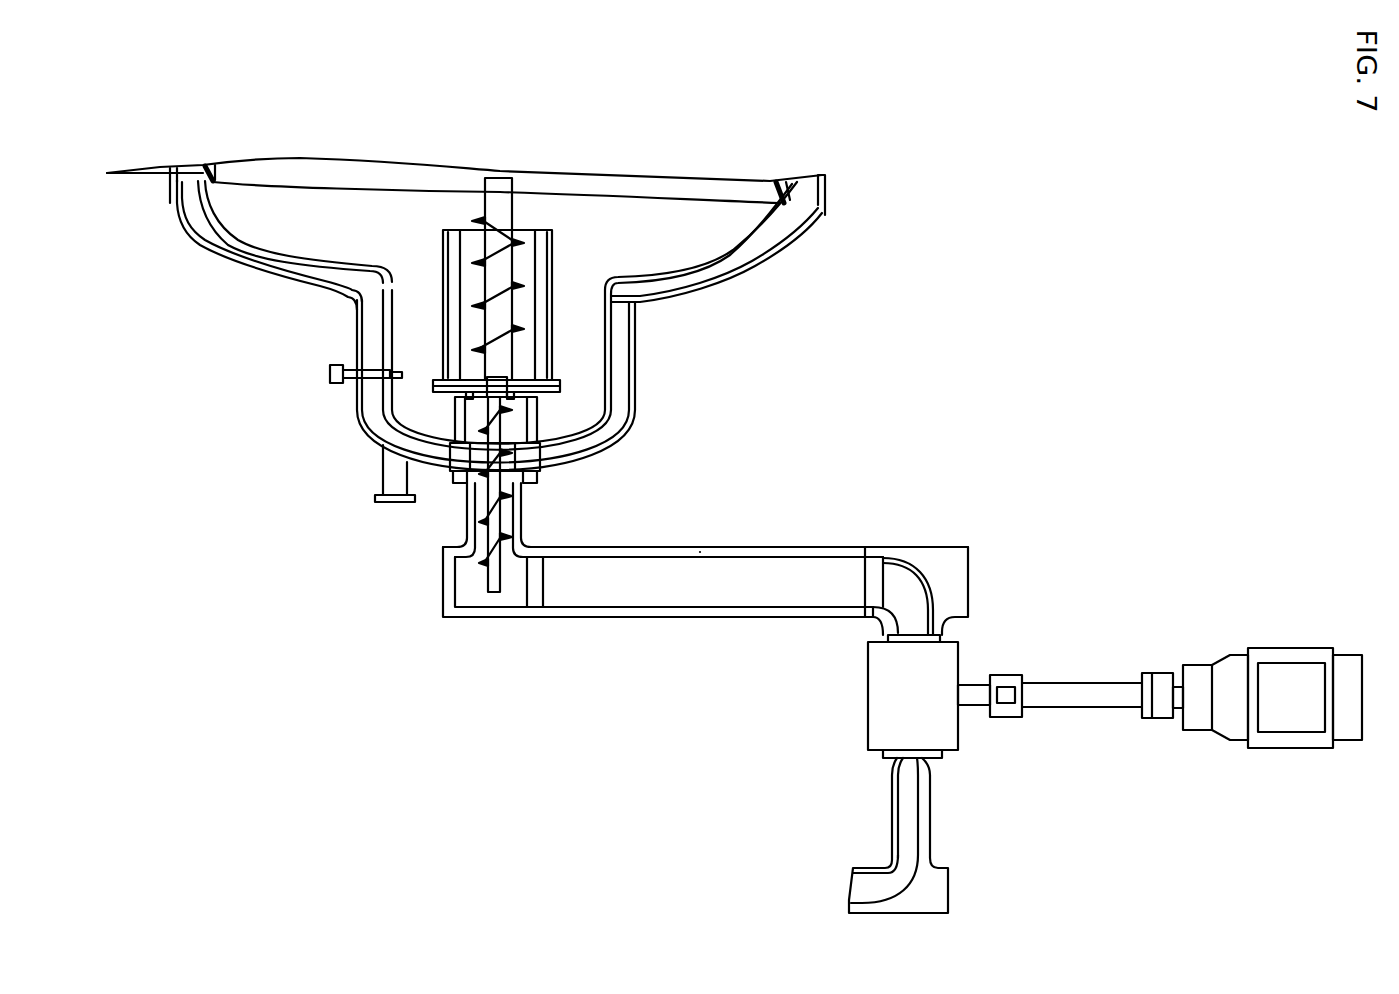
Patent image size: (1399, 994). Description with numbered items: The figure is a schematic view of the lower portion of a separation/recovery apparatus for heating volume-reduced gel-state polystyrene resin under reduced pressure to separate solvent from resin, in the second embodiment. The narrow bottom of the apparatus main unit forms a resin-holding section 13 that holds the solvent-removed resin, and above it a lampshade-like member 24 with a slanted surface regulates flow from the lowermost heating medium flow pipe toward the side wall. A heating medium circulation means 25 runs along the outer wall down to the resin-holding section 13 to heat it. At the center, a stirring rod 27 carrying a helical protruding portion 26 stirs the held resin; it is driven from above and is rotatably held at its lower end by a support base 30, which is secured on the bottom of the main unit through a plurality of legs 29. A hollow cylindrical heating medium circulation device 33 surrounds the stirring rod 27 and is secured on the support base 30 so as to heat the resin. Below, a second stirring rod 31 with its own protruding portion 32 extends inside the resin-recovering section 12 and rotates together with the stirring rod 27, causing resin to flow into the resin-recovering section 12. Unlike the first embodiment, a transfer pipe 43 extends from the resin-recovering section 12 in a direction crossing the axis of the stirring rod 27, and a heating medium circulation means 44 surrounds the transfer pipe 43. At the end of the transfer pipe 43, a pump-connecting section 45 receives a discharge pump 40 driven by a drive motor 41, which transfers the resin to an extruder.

The resin-recovering section 12 is at (520, 514).
The resin-holding section 13 is at (567, 400).
The lampshade-like member 24 is at (823, 215).
The heating medium circulation means 25 is at (208, 226).
The protruding portion 26 is at (480, 262).
The stirring rod 27 is at (498, 207).
The legs 29 is at (537, 417).
The support base 30 is at (443, 381).
The second stirring rod 31 is at (493, 592).
The protruding portion 32 is at (468, 537).
The heating medium circulation device 33 is at (533, 323).
The discharge pump 40 is at (982, 740).
The drive motor 41 is at (1233, 727).
The transfer pipe 43 is at (702, 587).
The heating medium circulation means 44 is at (780, 607).
The pump-connecting section 45 is at (982, 588).